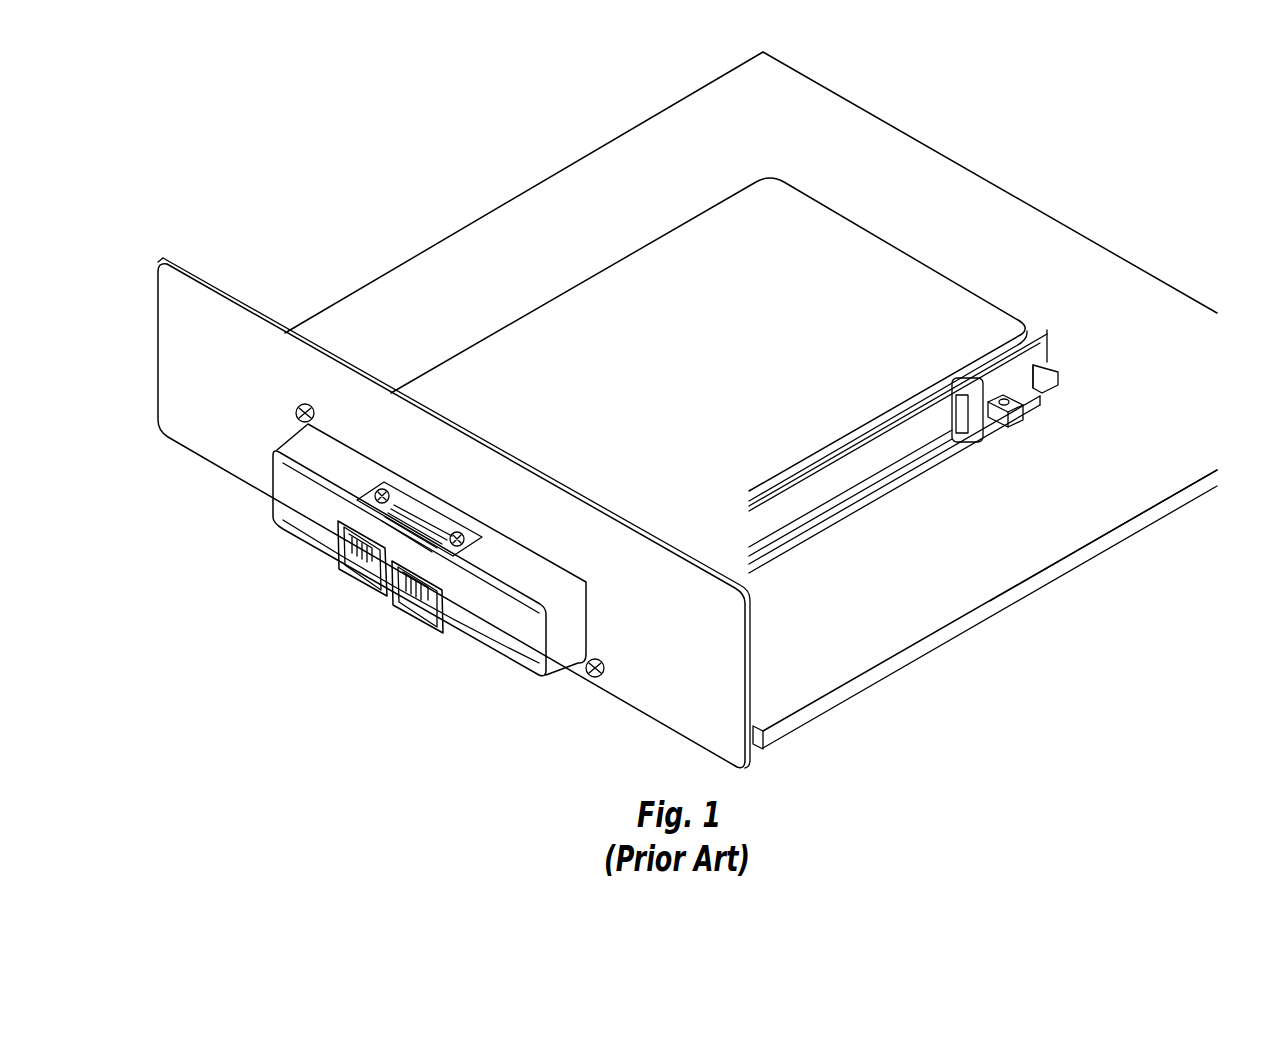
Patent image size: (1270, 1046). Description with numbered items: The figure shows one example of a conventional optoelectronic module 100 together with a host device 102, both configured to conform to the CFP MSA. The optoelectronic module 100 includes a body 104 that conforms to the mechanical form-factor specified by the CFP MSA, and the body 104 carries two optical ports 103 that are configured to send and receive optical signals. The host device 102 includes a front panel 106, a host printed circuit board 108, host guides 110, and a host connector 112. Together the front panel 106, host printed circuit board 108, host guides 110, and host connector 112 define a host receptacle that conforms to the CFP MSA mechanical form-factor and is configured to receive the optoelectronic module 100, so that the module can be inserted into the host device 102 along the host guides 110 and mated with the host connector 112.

The optoelectronic module 100 is at (420, 708).
The host device 102 is at (922, 783).
The optical ports 103 is at (412, 610).
The body 104 is at (718, 375).
The front panel 106 is at (733, 748).
The host printed circuit board 108 is at (898, 632).
The host guides 110 is at (913, 462).
The host connector 112 is at (1028, 383).